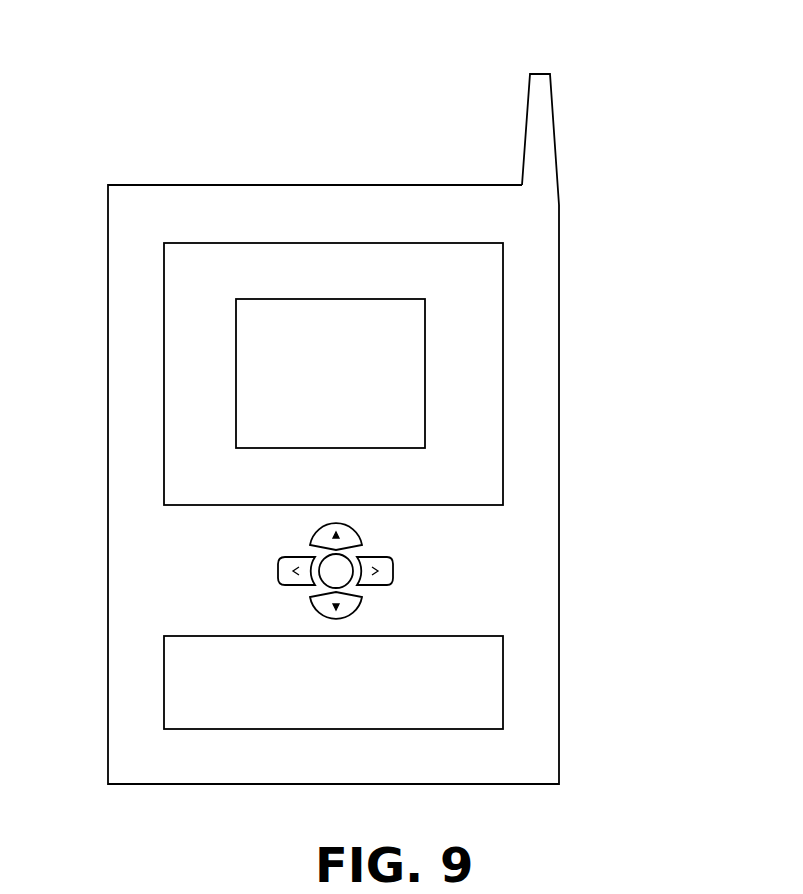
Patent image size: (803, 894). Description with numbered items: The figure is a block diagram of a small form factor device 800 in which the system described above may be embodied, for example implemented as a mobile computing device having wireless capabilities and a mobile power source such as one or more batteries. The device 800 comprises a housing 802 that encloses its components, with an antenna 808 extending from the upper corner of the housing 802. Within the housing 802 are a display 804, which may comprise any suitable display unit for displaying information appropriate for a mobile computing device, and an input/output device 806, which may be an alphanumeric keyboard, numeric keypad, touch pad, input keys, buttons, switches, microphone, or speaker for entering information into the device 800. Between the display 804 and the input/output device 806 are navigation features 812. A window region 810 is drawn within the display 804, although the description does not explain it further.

The small form factor device 800 is at (127, 92).
The housing 802 is at (559, 486).
The display 804 is at (503, 261).
The input/output (I/O) device 806 is at (503, 673).
The antenna 808 is at (527, 121).
The display window 810 is at (425, 392).
The navigation features 812 is at (407, 562).